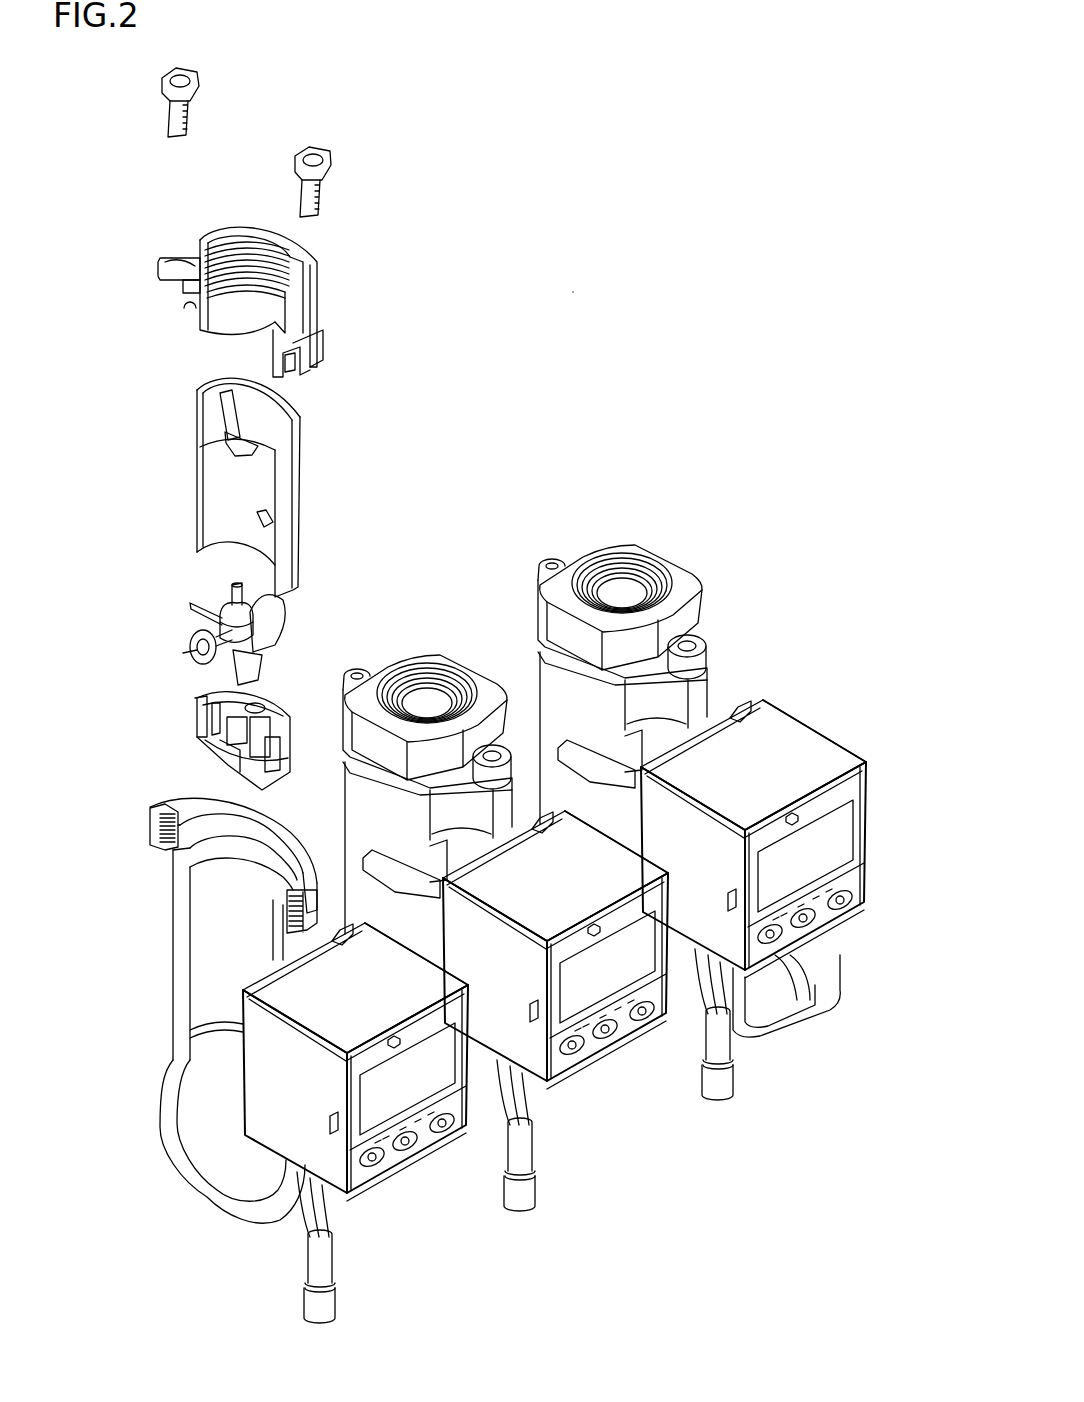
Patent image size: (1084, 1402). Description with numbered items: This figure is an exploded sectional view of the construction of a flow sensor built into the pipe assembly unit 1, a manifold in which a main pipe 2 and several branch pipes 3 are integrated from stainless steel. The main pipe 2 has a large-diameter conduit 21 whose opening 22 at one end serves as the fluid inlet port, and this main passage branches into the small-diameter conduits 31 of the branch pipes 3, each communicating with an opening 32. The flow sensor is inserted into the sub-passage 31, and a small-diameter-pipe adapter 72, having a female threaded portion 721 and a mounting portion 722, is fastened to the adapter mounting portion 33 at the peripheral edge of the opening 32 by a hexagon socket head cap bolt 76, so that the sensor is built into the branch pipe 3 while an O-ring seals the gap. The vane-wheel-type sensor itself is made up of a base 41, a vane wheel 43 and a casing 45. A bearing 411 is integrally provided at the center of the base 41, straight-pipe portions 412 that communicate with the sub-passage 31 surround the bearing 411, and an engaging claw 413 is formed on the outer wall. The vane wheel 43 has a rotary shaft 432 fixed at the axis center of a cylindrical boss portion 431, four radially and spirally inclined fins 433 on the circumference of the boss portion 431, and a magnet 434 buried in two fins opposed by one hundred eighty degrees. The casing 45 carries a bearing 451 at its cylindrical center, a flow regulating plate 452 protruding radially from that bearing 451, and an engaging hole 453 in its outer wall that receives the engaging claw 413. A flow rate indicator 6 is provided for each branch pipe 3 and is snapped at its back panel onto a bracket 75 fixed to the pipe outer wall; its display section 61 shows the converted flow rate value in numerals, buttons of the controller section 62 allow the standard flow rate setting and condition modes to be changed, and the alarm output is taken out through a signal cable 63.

The pipe assembly unit 1 is at (581, 286).
The main pipe 2 is at (190, 1122).
The large-diameter conduit 21 is at (245, 1142).
The opening 22 is at (200, 1163).
The branch pipe 3 is at (205, 921).
The small-diameter conduit 31 is at (257, 962).
The opening 32 is at (293, 840).
The adapter mounting portion 33 is at (152, 824).
The base 41 is at (215, 704).
The bearing 411 is at (230, 748).
The straight-pipe portion 412 is at (262, 708).
The engaging claw 413 is at (200, 712).
The vane wheel 43 is at (219, 613).
The boss portion 431 is at (230, 608).
The rotary shaft 432 is at (232, 595).
The fin 433 is at (268, 632).
The magnet 434 is at (193, 656).
The casing 45 is at (264, 487).
The bearing 451 is at (235, 468).
The flow regulating plate 452 is at (224, 425).
The engaging hole 453 is at (268, 519).
The flow rate indicator 6 is at (594, 1018).
The display section 61 is at (403, 1090).
The controller section 62 is at (380, 1162).
The signal cable 63 is at (335, 1265).
The small-diameter-pipe adapter 72 is at (407, 515).
The female threaded portion 721 is at (240, 277).
The mounting portion 722 is at (170, 262).
The bracket 75 is at (290, 366).
The hexagon socket head cap bolt 76 is at (186, 120).